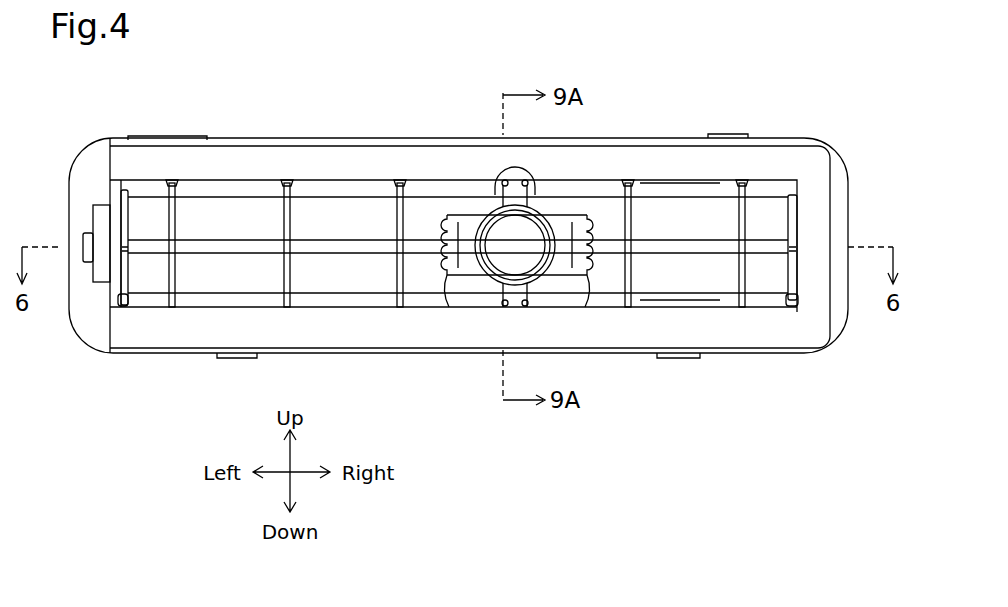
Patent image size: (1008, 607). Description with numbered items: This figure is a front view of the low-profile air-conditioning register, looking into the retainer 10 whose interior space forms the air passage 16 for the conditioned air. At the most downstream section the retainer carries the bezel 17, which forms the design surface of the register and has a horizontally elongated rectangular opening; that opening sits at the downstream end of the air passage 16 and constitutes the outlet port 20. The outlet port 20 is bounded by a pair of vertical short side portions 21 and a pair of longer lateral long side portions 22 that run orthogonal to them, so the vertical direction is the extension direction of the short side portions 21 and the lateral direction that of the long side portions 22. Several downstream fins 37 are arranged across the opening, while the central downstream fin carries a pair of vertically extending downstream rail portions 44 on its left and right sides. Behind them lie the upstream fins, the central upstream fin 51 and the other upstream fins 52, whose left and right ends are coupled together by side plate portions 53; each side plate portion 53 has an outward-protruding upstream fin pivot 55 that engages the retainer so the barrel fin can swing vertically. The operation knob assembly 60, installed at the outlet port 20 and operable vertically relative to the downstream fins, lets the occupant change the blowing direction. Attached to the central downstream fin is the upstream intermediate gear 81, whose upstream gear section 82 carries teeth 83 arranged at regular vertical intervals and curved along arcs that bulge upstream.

The retainer 10 is at (845, 160).
The air passage 16 is at (221, 229).
The bezel 17 is at (732, 335).
The outlet port 20 is at (458, 319).
The short side portions 21 is at (126, 183).
The long side portions 22 is at (347, 183).
The downstream fins 37 is at (172, 183).
The downstream rail portions 44 is at (505, 185).
The upstream fin 51 is at (656, 242).
The upstream fins 52 is at (677, 183).
The side plate portion 53 is at (125, 285).
The upstream fin pivot 55 is at (85, 242).
The operation knob assembly 60 is at (508, 265).
The upstream intermediate gear 81 is at (470, 222).
The upstream gear section 82 is at (444, 256).
The teeth 83 is at (445, 278).